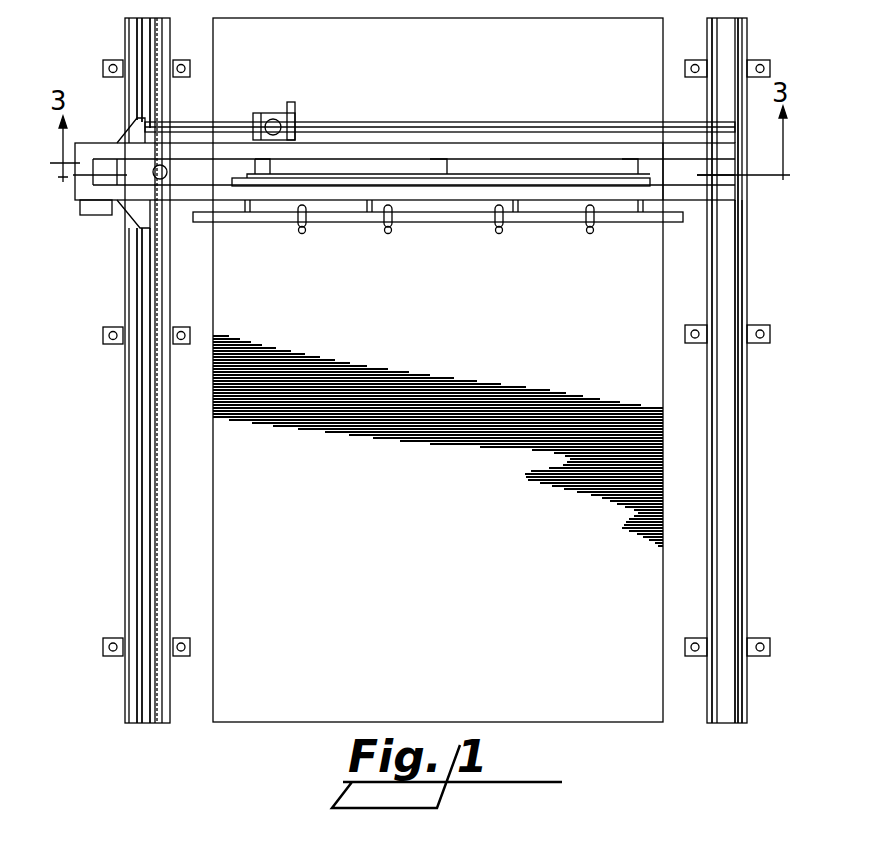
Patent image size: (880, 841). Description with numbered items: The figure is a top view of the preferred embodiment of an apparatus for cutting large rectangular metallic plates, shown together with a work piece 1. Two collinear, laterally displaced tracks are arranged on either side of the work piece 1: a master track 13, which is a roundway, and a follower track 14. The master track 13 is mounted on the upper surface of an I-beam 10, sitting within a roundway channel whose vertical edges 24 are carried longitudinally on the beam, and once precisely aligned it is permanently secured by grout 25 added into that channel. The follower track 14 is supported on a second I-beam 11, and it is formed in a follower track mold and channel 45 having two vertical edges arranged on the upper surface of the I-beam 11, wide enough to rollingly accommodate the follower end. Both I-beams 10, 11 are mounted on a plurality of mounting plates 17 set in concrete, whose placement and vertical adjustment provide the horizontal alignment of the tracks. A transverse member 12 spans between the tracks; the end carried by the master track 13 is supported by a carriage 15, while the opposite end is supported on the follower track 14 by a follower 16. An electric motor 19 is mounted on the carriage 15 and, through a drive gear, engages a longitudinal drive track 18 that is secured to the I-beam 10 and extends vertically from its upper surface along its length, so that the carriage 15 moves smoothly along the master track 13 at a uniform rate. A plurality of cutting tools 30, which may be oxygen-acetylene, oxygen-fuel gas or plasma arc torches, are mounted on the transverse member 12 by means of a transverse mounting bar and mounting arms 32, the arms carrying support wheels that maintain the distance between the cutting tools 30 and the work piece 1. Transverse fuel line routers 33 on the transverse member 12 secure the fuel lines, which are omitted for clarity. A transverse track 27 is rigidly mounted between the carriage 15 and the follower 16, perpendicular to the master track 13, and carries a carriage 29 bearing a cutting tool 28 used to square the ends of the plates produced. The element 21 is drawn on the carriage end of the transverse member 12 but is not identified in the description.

The work piece 1 is at (461, 76).
The I-beam 10 is at (125, 508).
The I-beam 11 is at (748, 508).
The transverse member 12 is at (80, 163).
The master track 13 is at (140, 460).
The follower track 14 is at (727, 255).
The carriage 15 is at (127, 137).
The follower 16 is at (725, 175).
The mounting plates 17 is at (105, 60).
The longitudinal drive track 18 is at (167, 480).
The electric motor 19 is at (167, 172).
The lower bracket 21 is at (90, 215).
The roundway channel vertical edges 24 is at (130, 425).
The grout 25 is at (135, 385).
The transverse track 27 is at (362, 124).
The cutting tool 28 is at (294, 106).
The carriage 29 is at (273, 119).
The cutting tools 30 is at (304, 230).
The mounting arms 32 is at (300, 233).
The transverse fuel line routers 33 is at (395, 178).
The follower track mold and channel 45 is at (715, 437).